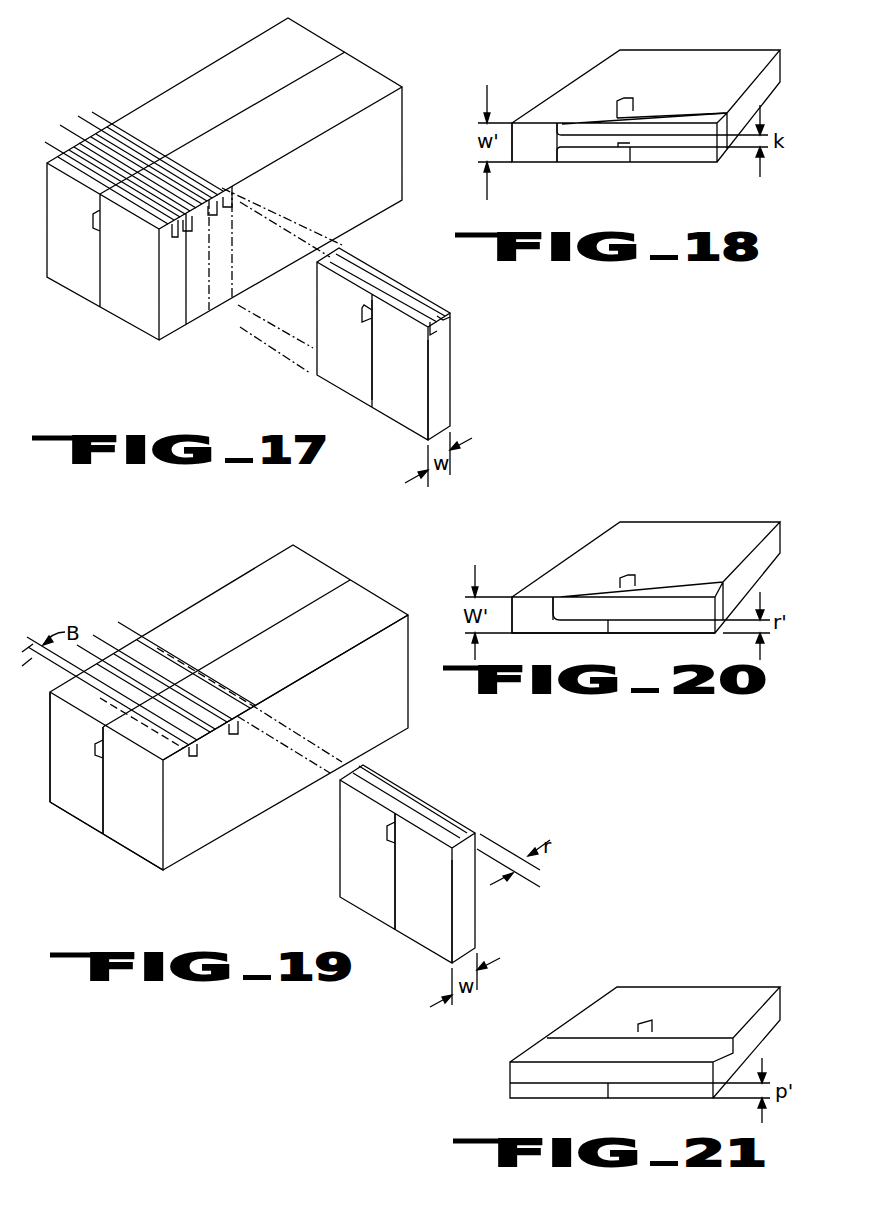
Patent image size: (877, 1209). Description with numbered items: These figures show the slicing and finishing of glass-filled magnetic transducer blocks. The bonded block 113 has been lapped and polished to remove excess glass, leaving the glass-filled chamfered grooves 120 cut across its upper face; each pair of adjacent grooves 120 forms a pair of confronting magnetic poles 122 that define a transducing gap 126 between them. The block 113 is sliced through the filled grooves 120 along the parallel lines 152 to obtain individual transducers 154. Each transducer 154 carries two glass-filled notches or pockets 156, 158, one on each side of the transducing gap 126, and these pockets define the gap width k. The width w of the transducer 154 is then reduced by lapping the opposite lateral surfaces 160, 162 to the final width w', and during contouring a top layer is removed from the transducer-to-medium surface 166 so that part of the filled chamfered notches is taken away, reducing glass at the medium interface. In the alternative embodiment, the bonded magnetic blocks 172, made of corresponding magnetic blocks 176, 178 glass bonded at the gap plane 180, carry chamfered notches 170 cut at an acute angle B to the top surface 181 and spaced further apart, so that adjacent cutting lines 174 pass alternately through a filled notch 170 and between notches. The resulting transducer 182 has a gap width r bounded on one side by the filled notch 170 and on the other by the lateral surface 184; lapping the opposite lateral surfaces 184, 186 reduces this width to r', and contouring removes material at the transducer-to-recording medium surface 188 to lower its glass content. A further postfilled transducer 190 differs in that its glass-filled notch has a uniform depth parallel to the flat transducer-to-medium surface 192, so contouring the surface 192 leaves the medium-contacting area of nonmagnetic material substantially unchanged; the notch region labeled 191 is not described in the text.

In FIG. 17, the bonded block 113 is at (208, 42).
In FIG. 17, the parallel lines 152 is at (92, 108).
In FIG. 17, the transducing gap 126 is at (158, 157).
In FIG. 18, the transducing gap 126 is at (632, 147).
In FIG. 17, the confronting magnetic poles 122 is at (213, 186).
In FIG. 17, the grooves 120 is at (187, 234).
In FIG. 17, the transducer 154 is at (412, 329).
In FIG. 18, the transducer 154 is at (646, 101).
In FIG. 17, the glass filled notch 156 is at (446, 323).
In FIG. 18, the glass filled notch 156 is at (700, 113).
In FIG. 17, the glass filled notch 158 is at (433, 340).
In FIG. 18, the glass filled notch 158 is at (700, 157).
In FIG. 17, the lateral surface 160 is at (416, 378).
In FIG. 17, the lateral surface 162 is at (451, 408).
In FIG. 18, the lateral surface 162 is at (728, 55).
In FIG. 18, the transducer-to-medium surface 166 is at (535, 156).
In FIG. 19, the bonded magnetic blocks 172 is at (212, 582).
In FIG. 19, the cutting lines 174 is at (310, 738).
In FIG. 19, the chamfered notches 170 is at (233, 735).
In FIG. 20, the chamfered notches 170 is at (680, 587).
In FIG. 19, the magnetic block 176 is at (75, 808).
In FIG. 19, the magnetic block 178 is at (127, 837).
In FIG. 19, the gap plane 180 is at (104, 782).
In FIG. 19, the top surface 181 is at (326, 649).
In FIG. 19, the transducer 182 is at (440, 856).
In FIG. 20, the transducer 182 is at (653, 559).
In FIG. 19, the lateral surface 184 is at (478, 912).
In FIG. 20, the lateral surface 184 is at (778, 562).
In FIG. 19, the lateral surface 186 is at (382, 867).
In FIG. 20, the lateral surface 186 is at (746, 549).
In FIG. 20, the transducer-to-recording medium surface 188 is at (542, 623).
In FIG. 21, the transducer 190 is at (611, 1008).
In FIG. 21, the tab 191 is at (590, 1037).
In FIG. 21, the transducer-to-medium surface 192 is at (515, 1075).